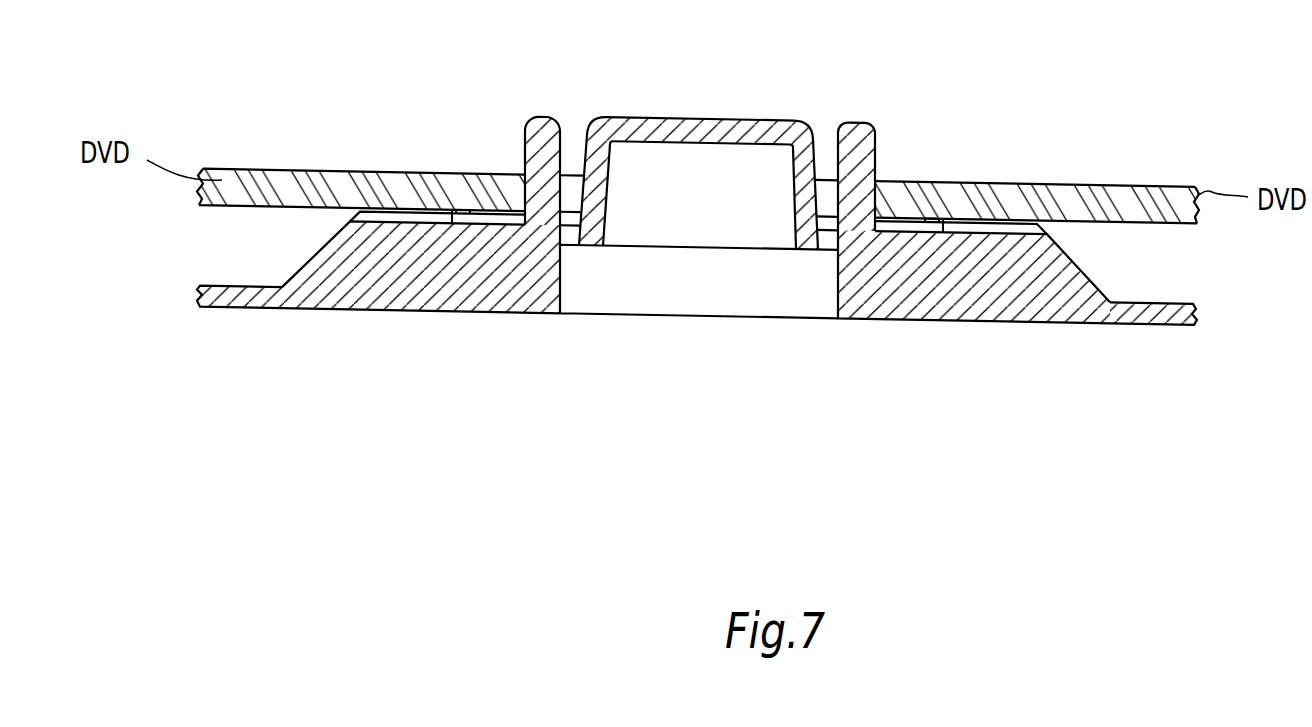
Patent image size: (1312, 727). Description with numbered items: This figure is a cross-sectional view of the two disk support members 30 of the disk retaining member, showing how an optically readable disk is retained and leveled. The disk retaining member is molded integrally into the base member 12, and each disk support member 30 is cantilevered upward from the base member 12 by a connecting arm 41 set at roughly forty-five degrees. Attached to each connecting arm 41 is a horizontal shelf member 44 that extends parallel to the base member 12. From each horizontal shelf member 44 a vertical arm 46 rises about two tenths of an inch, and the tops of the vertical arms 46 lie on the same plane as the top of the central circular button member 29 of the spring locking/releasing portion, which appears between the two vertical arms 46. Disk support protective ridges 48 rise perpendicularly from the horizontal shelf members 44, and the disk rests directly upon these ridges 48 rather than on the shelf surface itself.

The disk support member 30 is at (136, 219).
The hub body 41 is at (306, 270).
The base member 12 is at (232, 298).
The vertical arm 46 is at (531, 143).
The horizontal shelf member 44 is at (342, 212).
The disk support protective ridge 48 is at (452, 209).
The central circular button member 29 is at (710, 133).